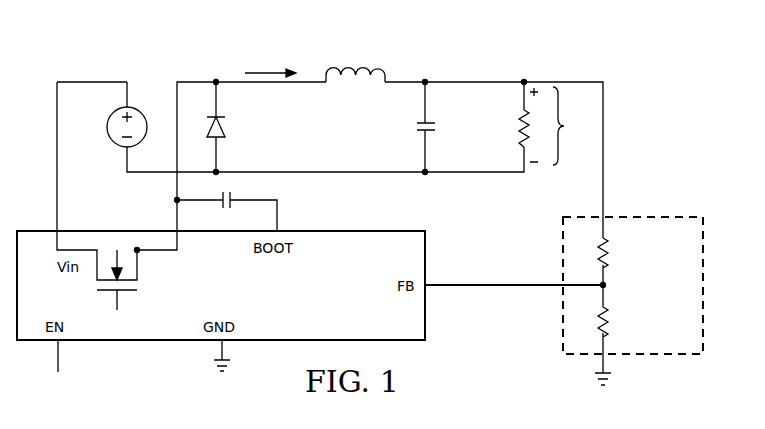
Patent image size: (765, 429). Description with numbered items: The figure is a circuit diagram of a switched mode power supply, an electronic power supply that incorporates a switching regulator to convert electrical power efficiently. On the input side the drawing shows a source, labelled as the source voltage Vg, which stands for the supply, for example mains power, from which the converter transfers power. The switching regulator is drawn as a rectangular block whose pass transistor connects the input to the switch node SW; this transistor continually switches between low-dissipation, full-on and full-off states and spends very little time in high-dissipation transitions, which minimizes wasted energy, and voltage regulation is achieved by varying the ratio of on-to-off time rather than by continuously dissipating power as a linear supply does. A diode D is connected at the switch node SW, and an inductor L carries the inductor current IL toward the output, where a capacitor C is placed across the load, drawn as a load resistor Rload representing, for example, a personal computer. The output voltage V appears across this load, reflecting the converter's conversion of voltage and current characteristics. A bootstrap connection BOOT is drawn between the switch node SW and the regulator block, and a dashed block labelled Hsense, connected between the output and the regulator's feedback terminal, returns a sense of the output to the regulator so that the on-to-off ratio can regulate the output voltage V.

The input voltage source Vg is at (113, 127).
The inductor L is at (355, 65).
The output capacitor C is at (417, 127).
The load resistor Rload is at (504, 121).
The output voltage V is at (566, 126).
The inductor current IL is at (270, 60).
The feedback sense network Hsense is at (633, 301).
The switch node / power MOSFET SW is at (137, 279).
The bootstrap capacitor BOOT is at (226, 211).
The freewheeling diode D is at (216, 127).